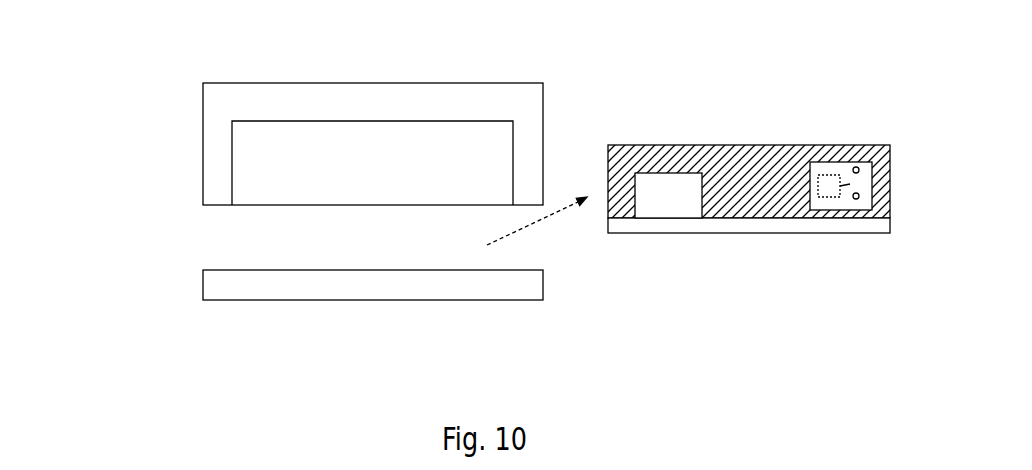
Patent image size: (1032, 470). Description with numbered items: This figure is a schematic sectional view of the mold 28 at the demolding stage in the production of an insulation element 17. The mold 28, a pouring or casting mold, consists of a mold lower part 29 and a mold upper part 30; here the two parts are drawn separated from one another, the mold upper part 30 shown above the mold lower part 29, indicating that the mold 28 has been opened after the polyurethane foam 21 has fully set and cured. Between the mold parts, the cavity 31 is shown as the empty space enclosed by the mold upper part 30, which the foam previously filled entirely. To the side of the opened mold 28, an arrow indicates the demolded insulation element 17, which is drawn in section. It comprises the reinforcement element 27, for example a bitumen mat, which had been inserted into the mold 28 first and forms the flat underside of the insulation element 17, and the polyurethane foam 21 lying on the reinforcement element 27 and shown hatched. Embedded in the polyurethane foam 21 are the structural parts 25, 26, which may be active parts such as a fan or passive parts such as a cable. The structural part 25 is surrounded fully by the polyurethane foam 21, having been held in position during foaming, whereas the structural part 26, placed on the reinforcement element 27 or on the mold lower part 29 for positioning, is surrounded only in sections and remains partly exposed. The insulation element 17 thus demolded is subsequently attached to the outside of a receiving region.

The insulation element 17 is at (749, 168).
The polyurethane foam 21 is at (772, 174).
The structural part 25 is at (840, 162).
The structural part 26 is at (653, 172).
The reinforcement element 27 is at (732, 233).
The mold 28 is at (280, 191).
The mold lower part 29 is at (203, 288).
The mold upper part 30 is at (203, 193).
The cavity 31 is at (382, 178).